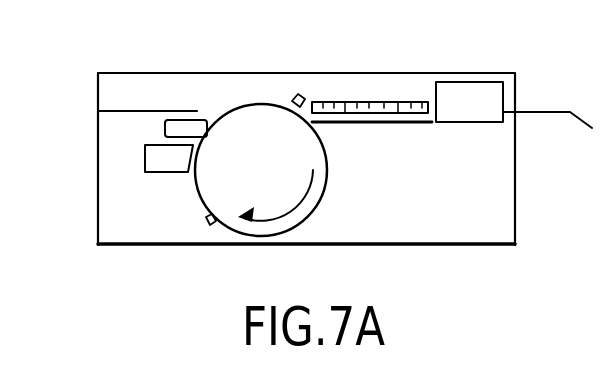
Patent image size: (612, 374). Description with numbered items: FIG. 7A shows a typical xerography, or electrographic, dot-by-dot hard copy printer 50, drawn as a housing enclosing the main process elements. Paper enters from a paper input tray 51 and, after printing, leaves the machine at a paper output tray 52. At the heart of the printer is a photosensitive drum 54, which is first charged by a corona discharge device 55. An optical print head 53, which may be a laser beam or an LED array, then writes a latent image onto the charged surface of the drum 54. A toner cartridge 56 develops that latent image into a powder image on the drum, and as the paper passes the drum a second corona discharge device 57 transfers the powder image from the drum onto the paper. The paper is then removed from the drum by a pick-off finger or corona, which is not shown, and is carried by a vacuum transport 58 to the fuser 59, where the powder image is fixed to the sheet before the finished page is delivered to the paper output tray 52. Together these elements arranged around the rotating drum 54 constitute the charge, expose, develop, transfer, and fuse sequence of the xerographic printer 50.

The xerography printer 50 is at (534, 190).
The paper input tray 51 is at (131, 110).
The paper output tray 52 is at (538, 112).
The optical print head 53 is at (145, 160).
The photosensitive drum 54 is at (213, 188).
The corona discharge device 55 is at (212, 226).
The toner cartridge 56 is at (165, 128).
The corona discharge device 57 is at (302, 95).
The vacuum transport 58 is at (355, 103).
The fuser 59 is at (470, 88).